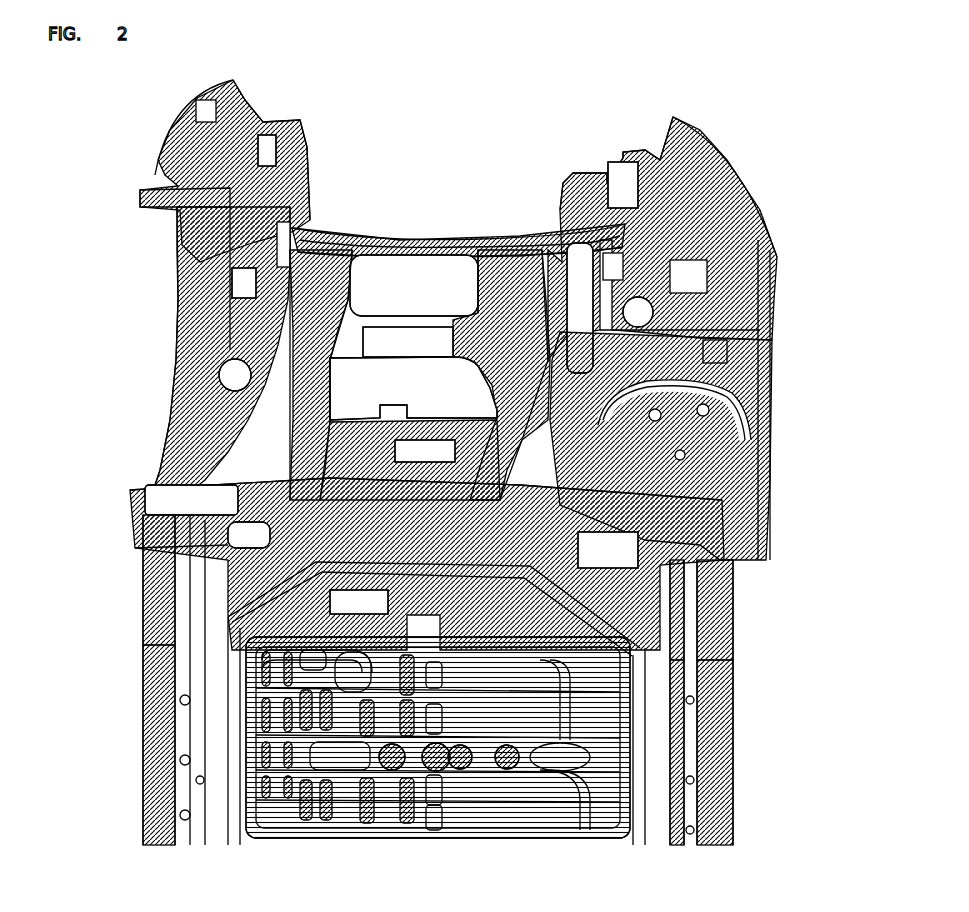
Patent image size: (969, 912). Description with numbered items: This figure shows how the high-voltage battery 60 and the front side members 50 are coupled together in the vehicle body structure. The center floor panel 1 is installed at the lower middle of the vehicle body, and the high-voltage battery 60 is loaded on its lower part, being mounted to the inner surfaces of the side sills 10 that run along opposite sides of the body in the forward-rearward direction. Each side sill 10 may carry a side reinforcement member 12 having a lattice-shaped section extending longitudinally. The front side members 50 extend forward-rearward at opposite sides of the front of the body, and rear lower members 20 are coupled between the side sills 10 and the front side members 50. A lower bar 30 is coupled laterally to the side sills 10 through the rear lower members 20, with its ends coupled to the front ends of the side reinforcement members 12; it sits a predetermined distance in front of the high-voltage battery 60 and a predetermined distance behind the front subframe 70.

The center floor panel 1 is at (608, 607).
The side sill 10 is at (198, 737).
The side reinforcement member 12 is at (141, 592).
The rear lower member 20 is at (250, 515).
The lower bar 30 is at (378, 518).
The front side member 50 is at (585, 336).
The high-voltage battery 60 is at (606, 740).
The front subframe 70 is at (404, 232).